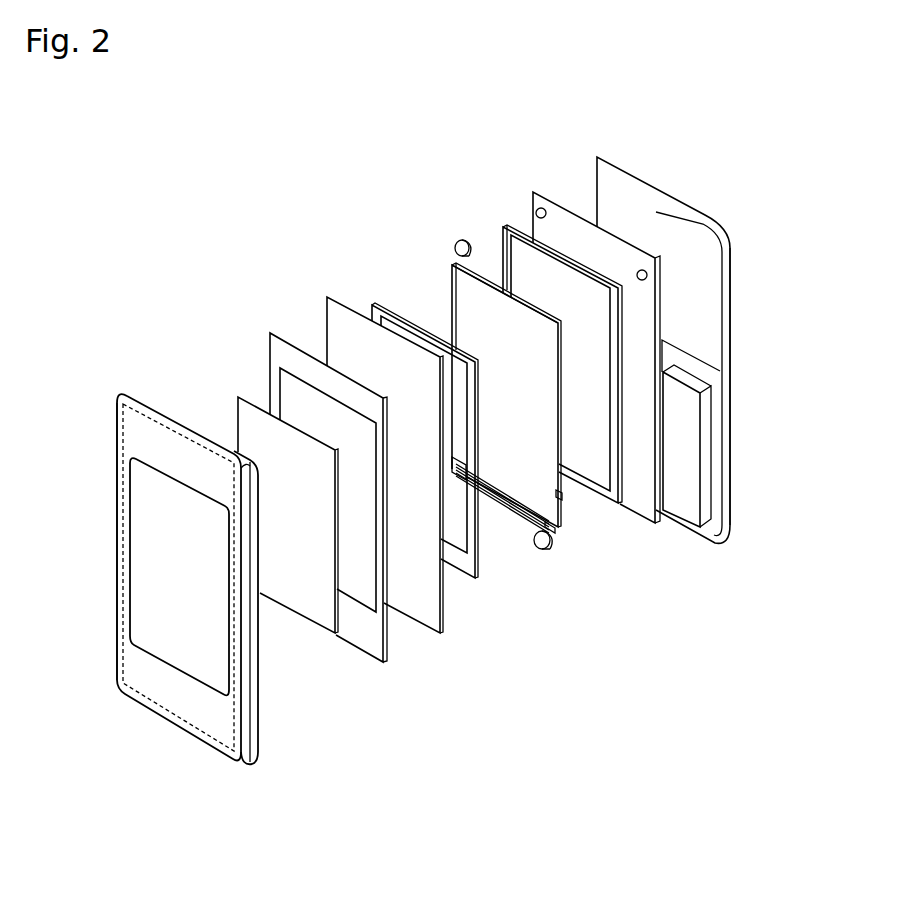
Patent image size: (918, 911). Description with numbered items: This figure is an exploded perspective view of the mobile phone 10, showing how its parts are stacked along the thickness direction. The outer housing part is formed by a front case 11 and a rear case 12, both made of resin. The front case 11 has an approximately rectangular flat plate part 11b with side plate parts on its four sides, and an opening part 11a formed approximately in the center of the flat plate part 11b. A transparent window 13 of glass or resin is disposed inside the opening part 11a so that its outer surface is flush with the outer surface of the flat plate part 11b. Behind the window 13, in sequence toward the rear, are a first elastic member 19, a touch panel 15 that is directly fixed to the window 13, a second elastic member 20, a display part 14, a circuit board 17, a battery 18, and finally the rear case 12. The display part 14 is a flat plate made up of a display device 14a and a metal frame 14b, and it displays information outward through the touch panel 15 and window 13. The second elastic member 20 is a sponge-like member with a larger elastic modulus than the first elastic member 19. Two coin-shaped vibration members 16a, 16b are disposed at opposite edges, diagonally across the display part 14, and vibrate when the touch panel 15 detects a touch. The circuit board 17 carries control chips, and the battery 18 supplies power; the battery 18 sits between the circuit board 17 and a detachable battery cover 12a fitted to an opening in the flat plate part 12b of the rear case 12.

The mobile phone 10 is at (372, 706).
The front case 11 is at (177, 702).
The opening part 11a is at (145, 526).
The flat plate part 11b is at (114, 448).
The rear case 12 is at (597, 188).
The battery cover 12a is at (713, 371).
The flat plate part 12b is at (731, 330).
The window 13 is at (304, 604).
The display part 14 is at (388, 196).
The display device 14a is at (463, 288).
The metal frame 14b is at (505, 228).
The touch panel 15 is at (327, 300).
The vibration member 16a is at (545, 551).
The vibration member 16b is at (466, 243).
The circuit board 17 is at (533, 201).
The battery 18 is at (686, 514).
The first elastic member 19 is at (271, 335).
The second elastic member 20 is at (465, 572).